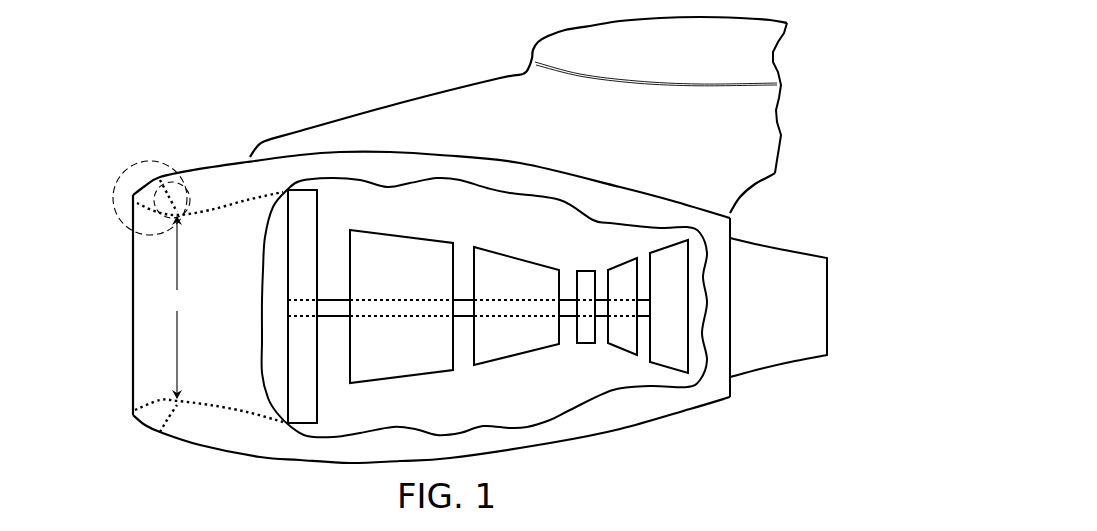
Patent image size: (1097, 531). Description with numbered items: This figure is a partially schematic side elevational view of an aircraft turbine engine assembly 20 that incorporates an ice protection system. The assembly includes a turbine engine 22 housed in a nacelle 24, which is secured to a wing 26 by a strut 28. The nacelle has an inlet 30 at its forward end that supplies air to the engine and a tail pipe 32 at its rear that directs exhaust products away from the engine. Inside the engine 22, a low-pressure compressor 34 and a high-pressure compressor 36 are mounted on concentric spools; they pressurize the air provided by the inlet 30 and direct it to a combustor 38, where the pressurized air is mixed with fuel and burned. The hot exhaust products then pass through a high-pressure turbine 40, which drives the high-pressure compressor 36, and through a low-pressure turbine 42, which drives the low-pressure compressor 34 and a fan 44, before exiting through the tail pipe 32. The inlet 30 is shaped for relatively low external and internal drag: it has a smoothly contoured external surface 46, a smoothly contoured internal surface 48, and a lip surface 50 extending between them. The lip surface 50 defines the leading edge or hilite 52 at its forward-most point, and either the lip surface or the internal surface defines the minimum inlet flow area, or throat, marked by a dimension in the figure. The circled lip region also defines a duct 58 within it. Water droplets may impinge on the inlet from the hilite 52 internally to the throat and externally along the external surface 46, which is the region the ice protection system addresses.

The aircraft turbine engine assembly 20 is at (290, 104).
The turbine engine 22 is at (520, 394).
The nacelle 24 is at (331, 467).
The wing 26 is at (545, 38).
The strut 28 is at (437, 97).
The inlet 30 is at (127, 358).
The tail pipe 32 is at (778, 368).
The low-pressure compressor 34 is at (390, 384).
The high-pressure compressor 36 is at (493, 366).
The combustor 38 is at (587, 344).
The high-pressure turbine 40 is at (620, 351).
The low-pressure turbine 42 is at (668, 366).
The fan 44 is at (305, 426).
The external surface 46 is at (322, 152).
The internal surface 48 is at (163, 222).
The lip surface 50 is at (135, 192).
The hilite 52 is at (118, 194).
The duct 58 is at (182, 182).